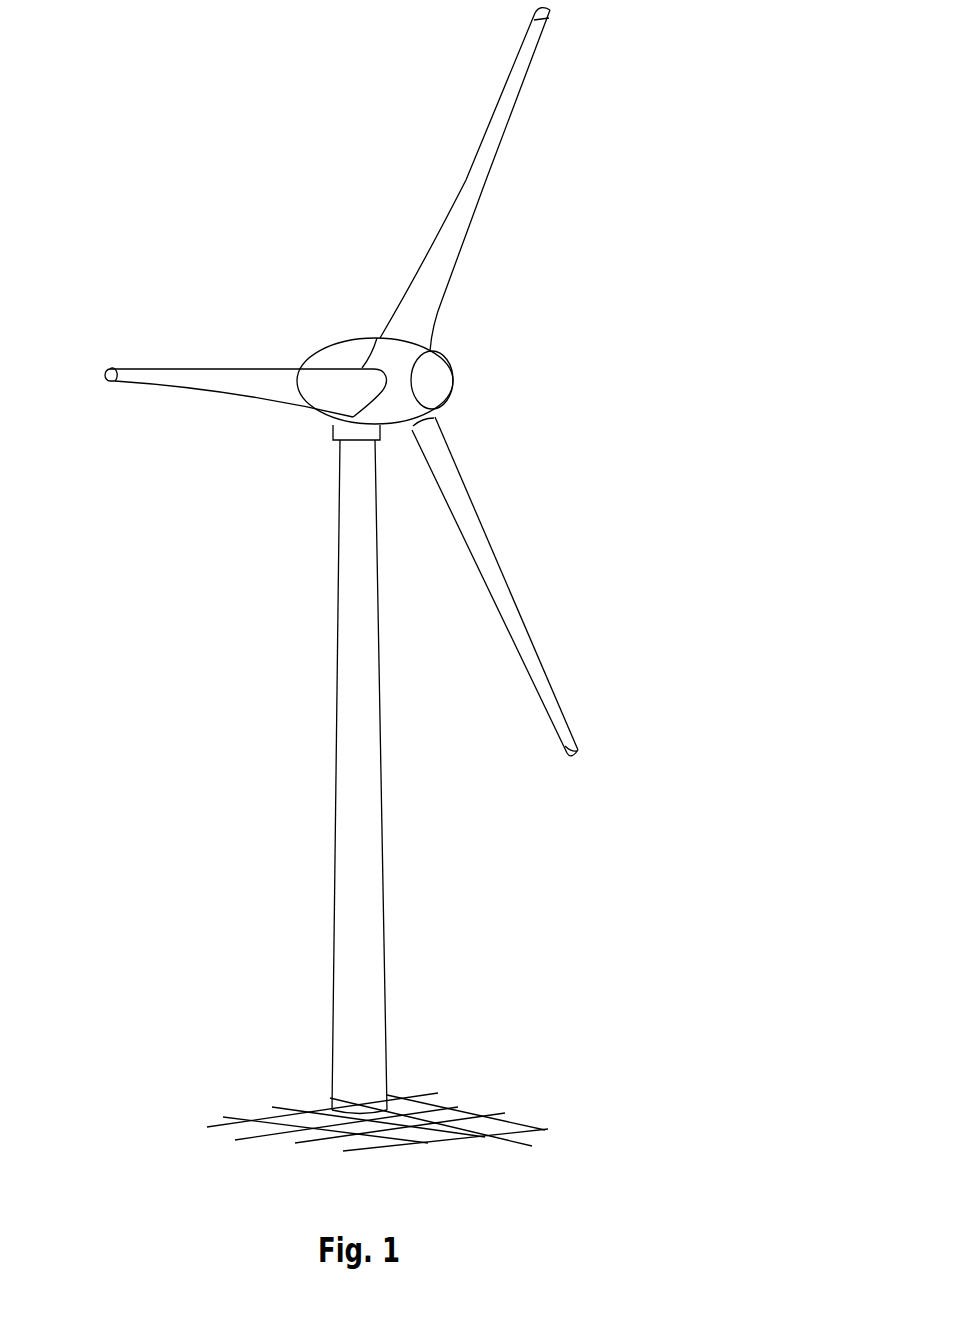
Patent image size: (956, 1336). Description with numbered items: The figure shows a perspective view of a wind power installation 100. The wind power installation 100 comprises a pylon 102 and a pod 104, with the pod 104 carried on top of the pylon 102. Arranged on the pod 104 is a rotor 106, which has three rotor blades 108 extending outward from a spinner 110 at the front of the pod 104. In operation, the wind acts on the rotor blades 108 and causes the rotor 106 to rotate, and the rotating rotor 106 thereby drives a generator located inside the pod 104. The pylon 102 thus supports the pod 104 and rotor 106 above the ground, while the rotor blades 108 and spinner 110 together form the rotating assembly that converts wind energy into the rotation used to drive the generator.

The wind power installation 100 is at (230, 588).
The pylon 102 is at (365, 878).
The pod 104 is at (352, 350).
The rotor 106 is at (507, 317).
The rotor blades 108 is at (508, 97).
The spinner 110 is at (438, 384).